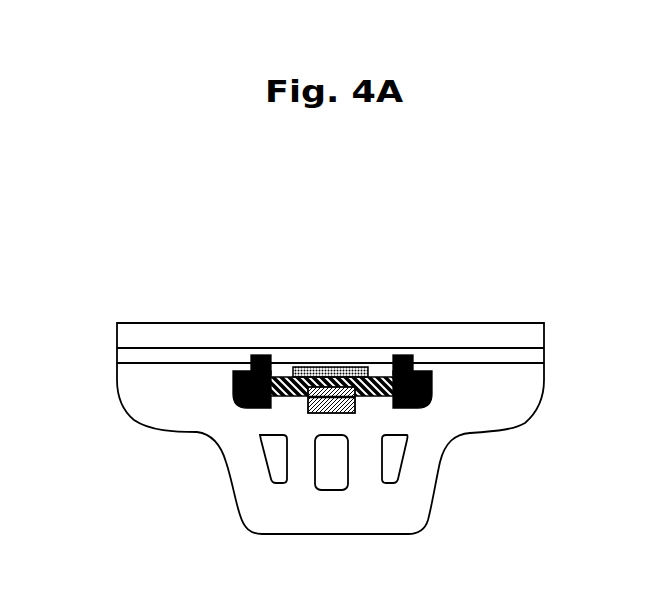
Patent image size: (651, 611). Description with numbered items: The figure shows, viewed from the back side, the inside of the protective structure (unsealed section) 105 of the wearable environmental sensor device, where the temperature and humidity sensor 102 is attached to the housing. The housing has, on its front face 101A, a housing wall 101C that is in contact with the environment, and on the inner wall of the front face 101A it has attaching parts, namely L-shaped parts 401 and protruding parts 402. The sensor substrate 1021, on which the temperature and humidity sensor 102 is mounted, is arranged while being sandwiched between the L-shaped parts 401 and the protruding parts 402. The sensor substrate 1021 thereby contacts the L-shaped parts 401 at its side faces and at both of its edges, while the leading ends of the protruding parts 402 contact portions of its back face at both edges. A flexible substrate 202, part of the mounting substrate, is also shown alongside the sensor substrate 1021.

The protective structure (unsealed section) 105 is at (343, 230).
The front face 101A is at (133, 403).
The housing wall 101C is at (178, 337).
The temperature and humidity sensor 102 is at (306, 414).
The sensor substrate 1021 is at (327, 367).
The flexible substrate 202 is at (357, 377).
The L-shaped parts 401 is at (240, 408).
The protruding parts 402 is at (263, 355).